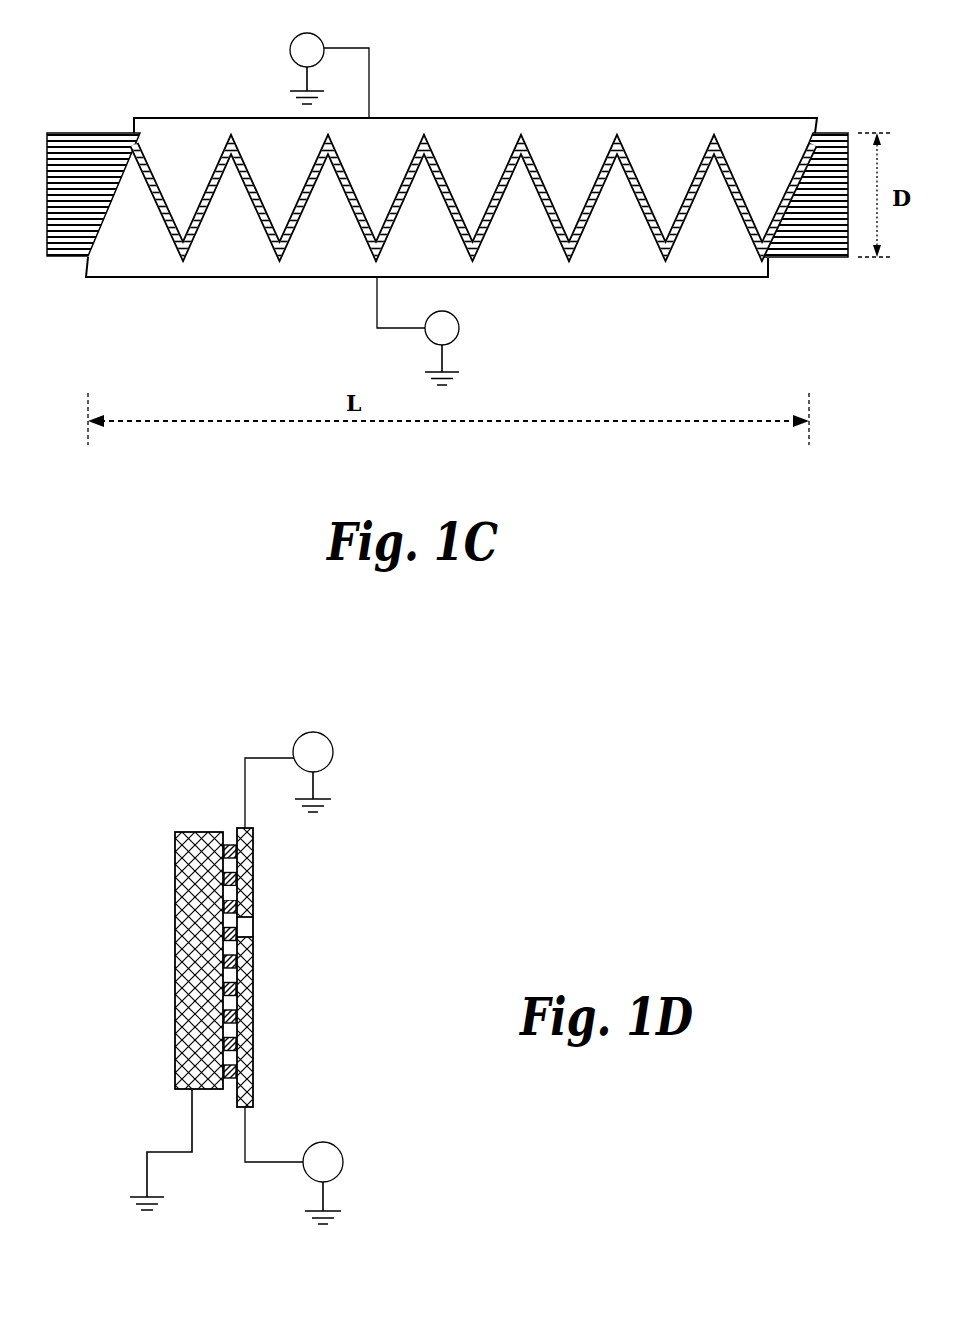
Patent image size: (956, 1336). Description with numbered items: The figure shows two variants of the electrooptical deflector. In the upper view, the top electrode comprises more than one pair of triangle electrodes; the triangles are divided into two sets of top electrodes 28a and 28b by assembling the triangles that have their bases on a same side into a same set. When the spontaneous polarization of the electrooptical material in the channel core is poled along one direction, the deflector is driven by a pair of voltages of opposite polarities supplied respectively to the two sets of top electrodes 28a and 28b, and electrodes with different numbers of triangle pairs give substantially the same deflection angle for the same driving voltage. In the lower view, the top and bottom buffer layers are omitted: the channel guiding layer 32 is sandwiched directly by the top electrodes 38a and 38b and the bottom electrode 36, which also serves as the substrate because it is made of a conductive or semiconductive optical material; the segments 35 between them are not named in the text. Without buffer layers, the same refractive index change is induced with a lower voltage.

In FIG. 1C, the first set of top electrodes 28a is at (157, 138).
In FIG. 1C, the second set of top electrodes 28b is at (137, 250).
In FIG. 1D, the channel guiding layer 32 is at (229, 962).
In FIG. 1D, the insulating gaps 35 is at (223, 893).
In FIG. 1D, the bottom electrode 36 is at (175, 1046).
In FIG. 1D, the top electrode 38a is at (253, 1028).
In FIG. 1D, the top electrode 38b is at (253, 872).